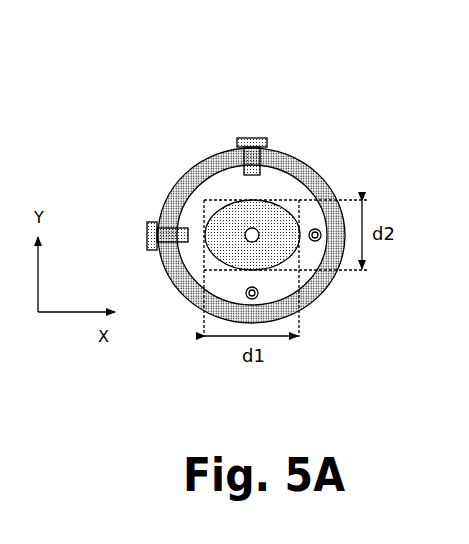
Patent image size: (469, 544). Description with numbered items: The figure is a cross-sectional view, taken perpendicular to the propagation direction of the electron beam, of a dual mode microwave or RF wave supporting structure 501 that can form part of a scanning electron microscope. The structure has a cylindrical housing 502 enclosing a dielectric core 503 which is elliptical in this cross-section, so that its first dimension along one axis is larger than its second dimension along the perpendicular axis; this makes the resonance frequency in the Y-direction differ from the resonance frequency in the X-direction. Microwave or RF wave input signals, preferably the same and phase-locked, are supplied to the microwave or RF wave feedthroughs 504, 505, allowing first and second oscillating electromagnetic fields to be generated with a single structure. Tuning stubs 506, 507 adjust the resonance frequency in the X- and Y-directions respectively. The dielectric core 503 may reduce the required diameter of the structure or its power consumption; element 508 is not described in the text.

The dual mode microwave or RF wave supporting structure 501 is at (313, 97).
The cylindrical housing 502 is at (316, 176).
The dielectric core 503 is at (223, 219).
The microwave or RF wave feedthrough 504 is at (259, 296).
The microwave or RF wave feedthrough 505 is at (320, 239).
The tuning stub 506 is at (152, 222).
The tuning stub 507 is at (237, 144).
The reference element 508 is at (459, 201).